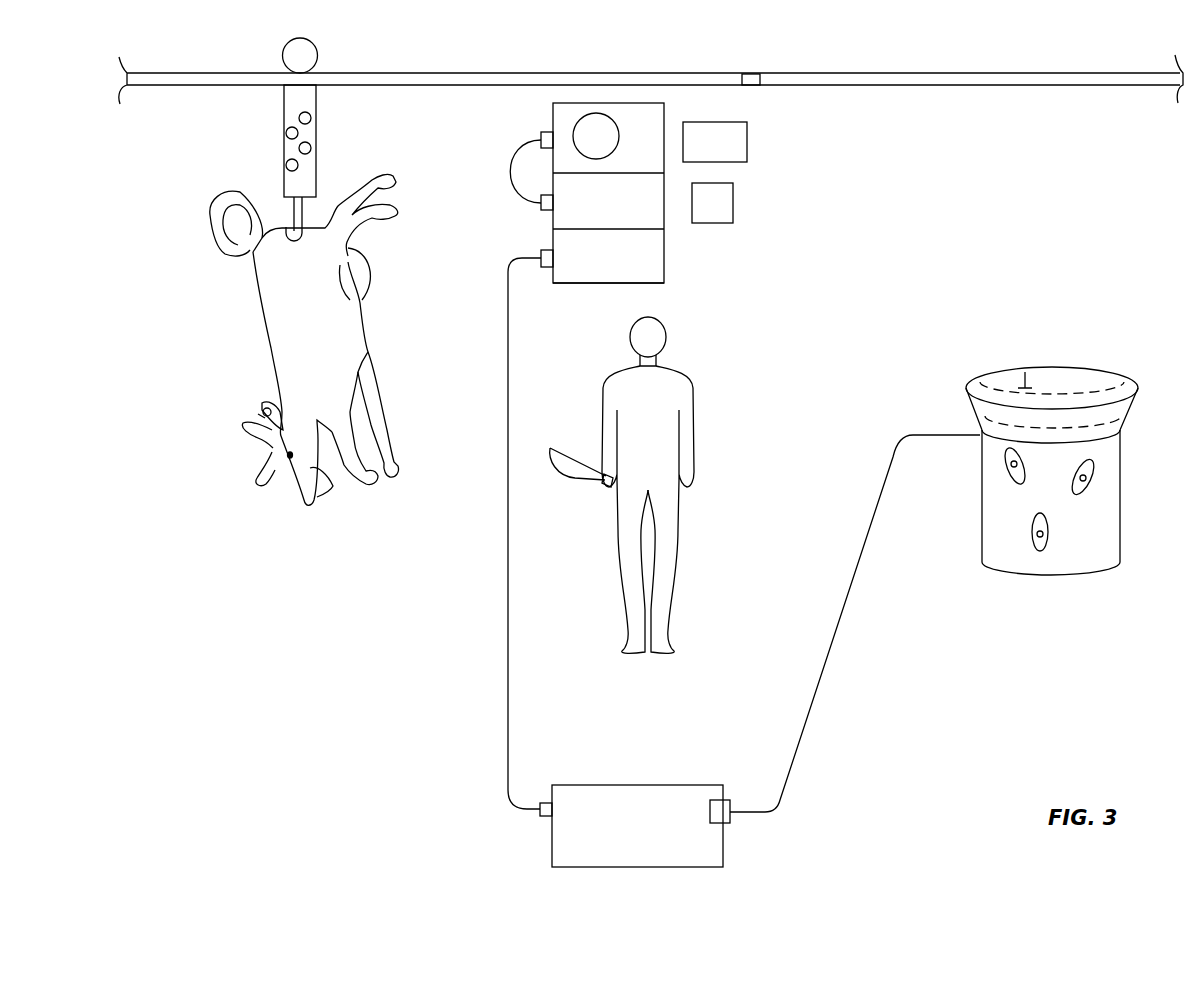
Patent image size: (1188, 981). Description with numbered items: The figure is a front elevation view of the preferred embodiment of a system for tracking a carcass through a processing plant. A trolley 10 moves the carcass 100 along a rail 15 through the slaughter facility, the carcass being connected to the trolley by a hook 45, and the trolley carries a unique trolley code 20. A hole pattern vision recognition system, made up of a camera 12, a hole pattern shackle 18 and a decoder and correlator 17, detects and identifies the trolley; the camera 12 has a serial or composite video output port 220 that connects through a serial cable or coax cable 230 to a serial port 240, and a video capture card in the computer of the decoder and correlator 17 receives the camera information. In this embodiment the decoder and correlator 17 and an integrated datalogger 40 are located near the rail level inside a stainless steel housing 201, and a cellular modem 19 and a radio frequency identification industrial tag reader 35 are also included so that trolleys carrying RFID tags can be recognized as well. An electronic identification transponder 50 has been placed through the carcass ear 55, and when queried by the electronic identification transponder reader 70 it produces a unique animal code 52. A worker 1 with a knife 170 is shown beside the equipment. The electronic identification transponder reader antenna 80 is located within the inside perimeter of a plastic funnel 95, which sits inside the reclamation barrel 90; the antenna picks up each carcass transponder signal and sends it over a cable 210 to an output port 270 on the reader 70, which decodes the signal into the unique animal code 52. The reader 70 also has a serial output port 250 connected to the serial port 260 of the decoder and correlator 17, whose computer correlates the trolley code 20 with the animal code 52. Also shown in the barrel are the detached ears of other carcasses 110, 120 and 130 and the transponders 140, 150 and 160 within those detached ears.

The worker 1 is at (696, 435).
The trolley 10 is at (286, 50).
The camera 12 is at (652, 165).
The rail 15 is at (865, 73).
The decoder and correlator 17 is at (652, 221).
The hole pattern shackle 18 is at (284, 117).
The cellular modem 19 is at (725, 215).
The trolley code 20 is at (751, 86).
The radio frequency identification industrial tag reader 35 is at (727, 154).
The datalogger 40 is at (652, 276).
The hook 45 is at (293, 218).
The electronic identification transponder 50 is at (263, 410).
The unique animal code 52 is at (268, 405).
The carcass ear 55 is at (260, 417).
The electronic identification transponder reader 70 is at (651, 852).
The electronic identification transponder reader antenna 80 is at (1024, 372).
The reclamation barrel 90 is at (1002, 571).
The plastic funnel 95 is at (1115, 372).
The carcass 100 is at (262, 318).
The detached ear of other carcass 110 is at (1008, 484).
The detached ear of other carcass 120 is at (1040, 553).
The detached ear of other carcass 130 is at (1085, 493).
The transponder within detached ear 140 is at (1090, 488).
The transponder within detached ear 150 is at (1010, 468).
The transponder within detached ear 160 is at (1045, 550).
The knife 170 is at (570, 480).
The stainless steel housing 201 is at (638, 202).
The cable 210 is at (846, 593).
The camera output port 220 is at (541, 136).
The serial cable or coax NTSC cable 230 is at (510, 175).
The serial port 240 is at (541, 206).
The serial output port 250 is at (540, 816).
The serial port 260 is at (507, 568).
The output port 270 is at (731, 824).